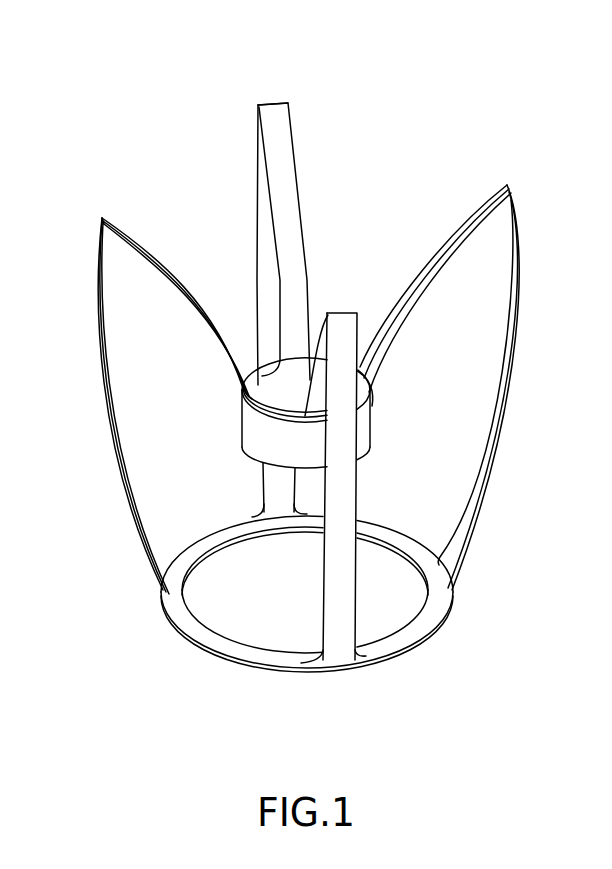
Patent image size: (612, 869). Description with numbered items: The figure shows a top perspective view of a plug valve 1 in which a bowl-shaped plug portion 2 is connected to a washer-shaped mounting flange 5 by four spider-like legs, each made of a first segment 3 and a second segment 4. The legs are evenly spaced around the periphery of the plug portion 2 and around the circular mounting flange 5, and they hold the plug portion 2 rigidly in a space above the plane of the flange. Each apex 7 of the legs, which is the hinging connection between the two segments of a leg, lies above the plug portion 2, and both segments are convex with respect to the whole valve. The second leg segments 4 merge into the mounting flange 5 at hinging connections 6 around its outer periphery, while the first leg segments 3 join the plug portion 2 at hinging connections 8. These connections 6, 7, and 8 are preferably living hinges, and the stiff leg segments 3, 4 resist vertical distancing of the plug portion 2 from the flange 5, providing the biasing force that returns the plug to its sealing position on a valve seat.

The plug valve 1 is at (297, 384).
The plug portion 2 is at (264, 440).
The first leg segment 3 is at (187, 283).
The second leg segment 4 is at (285, 172).
The mounting flange 5 is at (426, 608).
The hinging connection between second leg segment and mounting flange 6 is at (488, 567).
The apex of spider-like leg 7 is at (269, 83).
The hinging connection between first leg segment and sealing plug 8 is at (220, 387).